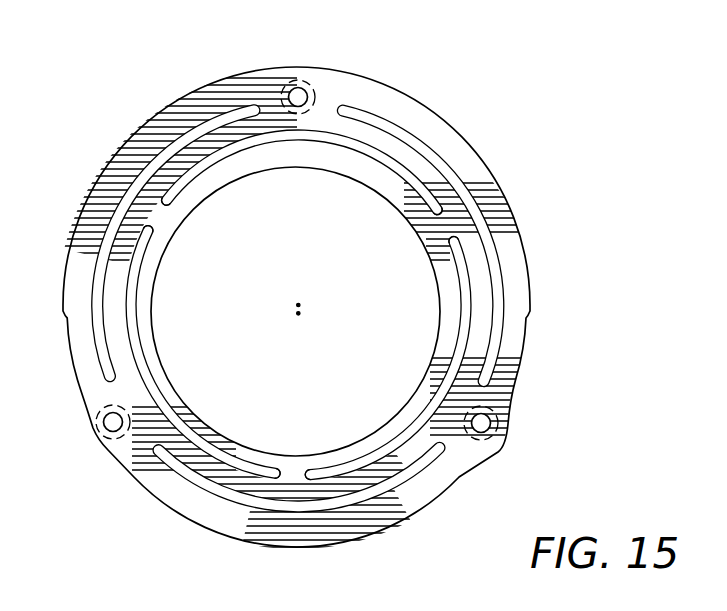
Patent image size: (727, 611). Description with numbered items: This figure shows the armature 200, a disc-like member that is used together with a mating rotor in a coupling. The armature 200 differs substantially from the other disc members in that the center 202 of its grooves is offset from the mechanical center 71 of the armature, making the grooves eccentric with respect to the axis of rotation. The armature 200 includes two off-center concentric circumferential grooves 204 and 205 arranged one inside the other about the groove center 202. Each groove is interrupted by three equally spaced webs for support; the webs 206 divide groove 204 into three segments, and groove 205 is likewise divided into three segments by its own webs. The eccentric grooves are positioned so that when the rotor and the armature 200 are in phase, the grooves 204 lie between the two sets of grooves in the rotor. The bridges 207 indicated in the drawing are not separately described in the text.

The armature 200 is at (486, 164).
The groove center 202 is at (303, 303).
The circumferential groove 204 is at (374, 112).
The circumferential groove 205 is at (177, 183).
The web 206 is at (281, 104).
The bridges between slots 207 is at (449, 231).
The mechanical center 71 is at (303, 310).